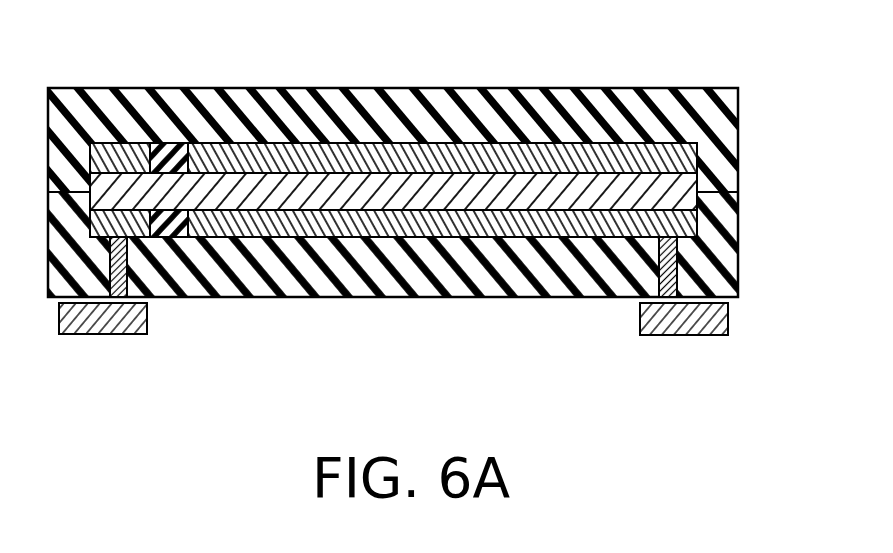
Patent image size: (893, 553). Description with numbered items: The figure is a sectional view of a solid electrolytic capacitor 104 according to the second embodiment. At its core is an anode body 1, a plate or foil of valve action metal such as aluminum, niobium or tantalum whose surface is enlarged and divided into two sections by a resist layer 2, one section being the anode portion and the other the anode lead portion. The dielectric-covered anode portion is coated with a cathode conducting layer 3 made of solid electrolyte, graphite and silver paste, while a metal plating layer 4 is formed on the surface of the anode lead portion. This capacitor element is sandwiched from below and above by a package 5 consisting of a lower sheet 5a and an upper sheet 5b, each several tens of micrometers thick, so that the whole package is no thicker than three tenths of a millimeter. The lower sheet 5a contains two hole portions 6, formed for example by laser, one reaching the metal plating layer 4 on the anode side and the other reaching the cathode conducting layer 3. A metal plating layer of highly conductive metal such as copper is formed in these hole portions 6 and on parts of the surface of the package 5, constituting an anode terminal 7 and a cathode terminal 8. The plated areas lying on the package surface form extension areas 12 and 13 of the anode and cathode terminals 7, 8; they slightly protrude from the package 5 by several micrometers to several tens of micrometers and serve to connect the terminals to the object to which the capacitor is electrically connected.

The solid electrolytic capacitor 104 is at (415, 205).
The anode body 1 is at (233, 190).
The resist layer 2 is at (160, 150).
The cathode conducting layer 3 is at (465, 158).
The metal plating layer 4 is at (122, 134).
The package 5 is at (415, 162).
The lower sheet 5a is at (710, 245).
The upper sheet 5b is at (703, 115).
The hole portions 6 is at (117, 272).
The anode terminal 7 is at (117, 355).
The cathode terminal 8 is at (684, 356).
The extension area 12 is at (113, 325).
The extension area 13 is at (665, 335).